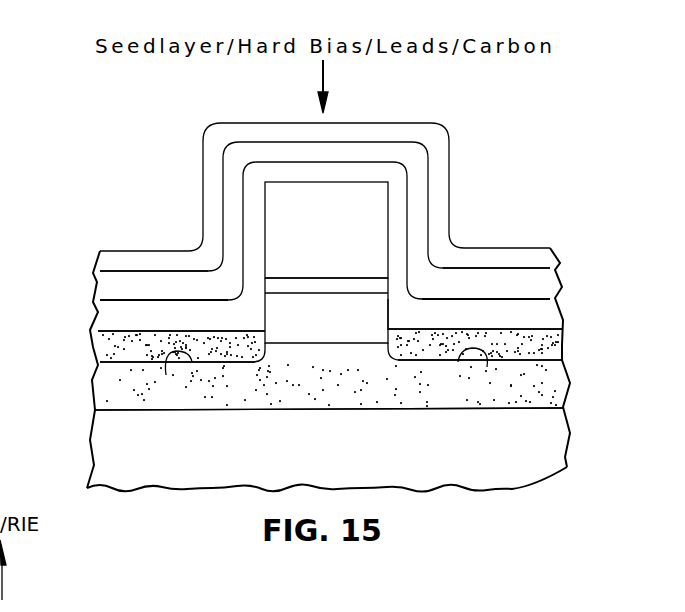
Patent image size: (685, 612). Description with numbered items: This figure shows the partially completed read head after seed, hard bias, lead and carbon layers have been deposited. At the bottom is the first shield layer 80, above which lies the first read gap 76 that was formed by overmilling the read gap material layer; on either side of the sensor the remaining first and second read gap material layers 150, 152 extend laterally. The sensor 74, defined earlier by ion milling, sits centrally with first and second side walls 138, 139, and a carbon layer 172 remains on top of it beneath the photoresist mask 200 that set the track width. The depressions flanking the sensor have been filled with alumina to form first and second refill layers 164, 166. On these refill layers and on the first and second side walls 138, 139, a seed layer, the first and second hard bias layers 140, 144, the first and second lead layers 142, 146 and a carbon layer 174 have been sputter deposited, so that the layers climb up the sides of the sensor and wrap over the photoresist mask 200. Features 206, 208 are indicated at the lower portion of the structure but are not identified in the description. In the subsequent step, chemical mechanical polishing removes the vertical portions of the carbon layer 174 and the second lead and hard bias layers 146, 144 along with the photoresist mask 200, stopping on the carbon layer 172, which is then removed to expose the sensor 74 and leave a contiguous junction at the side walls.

The sensor 74 is at (368, 303).
The read gap G1 76 is at (355, 394).
The first shield layer 80 is at (355, 459).
The first side wall 138 is at (203, 252).
The second side wall 139 is at (388, 315).
The first hard bias layer 140 is at (100, 312).
The first lead layer 142 is at (97, 283).
The second hard bias layer 144 is at (547, 317).
The second lead layer 146 is at (540, 282).
The first read gap material layer 150 is at (227, 399).
The second read gap material layer 152 is at (468, 398).
The first refill layer 164 is at (100, 348).
The second refill layer 166 is at (545, 347).
The carbon layer 172 is at (273, 280).
The carbon layer 174 is at (250, 135).
The photoresist mask 200 is at (365, 195).
The first sidewall 206 is at (166, 375).
The second sidewall 208 is at (487, 367).